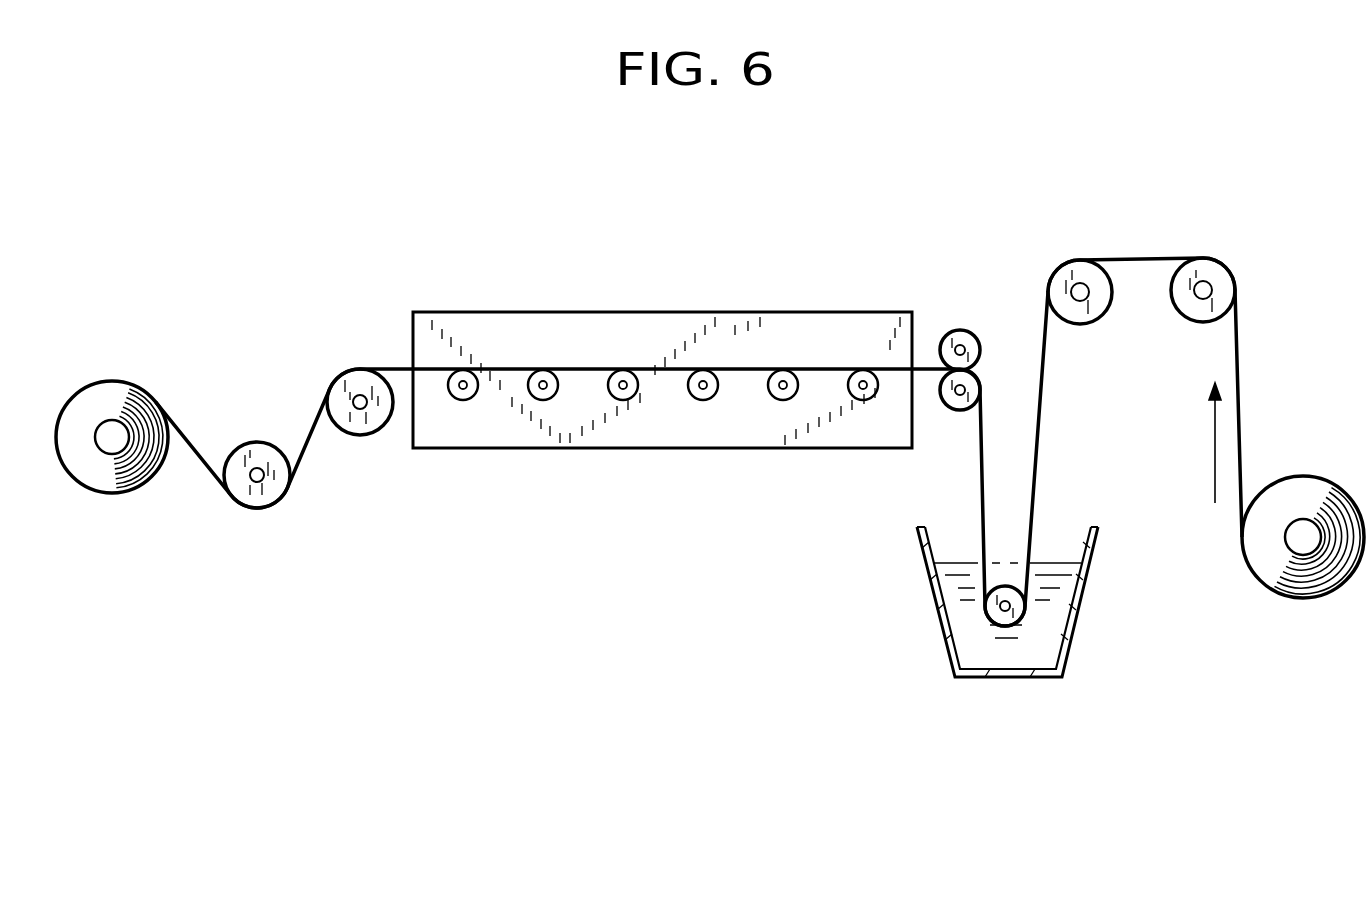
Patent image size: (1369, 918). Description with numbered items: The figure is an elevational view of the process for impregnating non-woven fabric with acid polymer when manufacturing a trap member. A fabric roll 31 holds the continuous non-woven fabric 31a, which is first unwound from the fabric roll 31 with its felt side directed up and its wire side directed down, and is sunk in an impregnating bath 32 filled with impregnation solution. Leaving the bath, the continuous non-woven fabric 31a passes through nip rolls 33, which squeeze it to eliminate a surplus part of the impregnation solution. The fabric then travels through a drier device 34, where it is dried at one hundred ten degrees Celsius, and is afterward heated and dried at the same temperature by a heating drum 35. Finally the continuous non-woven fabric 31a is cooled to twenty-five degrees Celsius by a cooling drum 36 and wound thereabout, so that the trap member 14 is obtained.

The trap member 14 is at (115, 392).
The cooling drum 36 is at (258, 453).
The heating drum 35 is at (357, 437).
The drier device 34 is at (655, 312).
The nip rolls 33 is at (968, 340).
The impregnating bath 32 is at (1080, 618).
The continuous non-woven fabric 31a is at (1242, 367).
The fabric roll 31 is at (1303, 485).